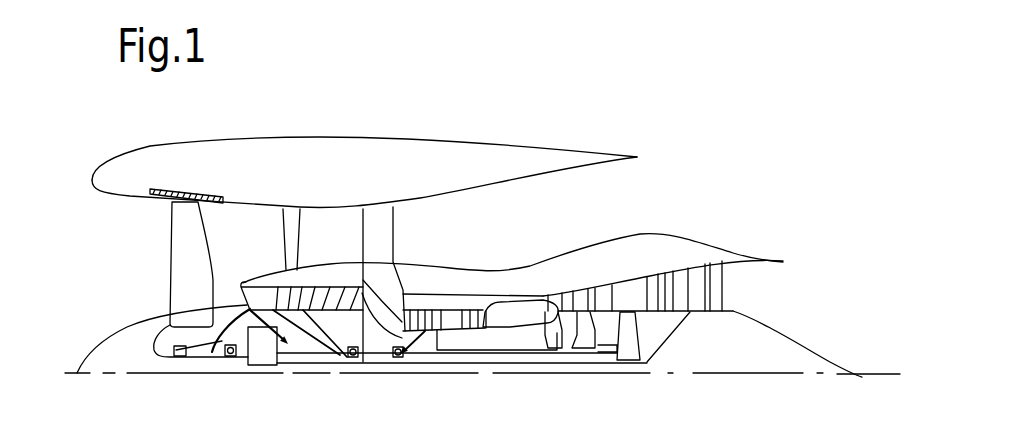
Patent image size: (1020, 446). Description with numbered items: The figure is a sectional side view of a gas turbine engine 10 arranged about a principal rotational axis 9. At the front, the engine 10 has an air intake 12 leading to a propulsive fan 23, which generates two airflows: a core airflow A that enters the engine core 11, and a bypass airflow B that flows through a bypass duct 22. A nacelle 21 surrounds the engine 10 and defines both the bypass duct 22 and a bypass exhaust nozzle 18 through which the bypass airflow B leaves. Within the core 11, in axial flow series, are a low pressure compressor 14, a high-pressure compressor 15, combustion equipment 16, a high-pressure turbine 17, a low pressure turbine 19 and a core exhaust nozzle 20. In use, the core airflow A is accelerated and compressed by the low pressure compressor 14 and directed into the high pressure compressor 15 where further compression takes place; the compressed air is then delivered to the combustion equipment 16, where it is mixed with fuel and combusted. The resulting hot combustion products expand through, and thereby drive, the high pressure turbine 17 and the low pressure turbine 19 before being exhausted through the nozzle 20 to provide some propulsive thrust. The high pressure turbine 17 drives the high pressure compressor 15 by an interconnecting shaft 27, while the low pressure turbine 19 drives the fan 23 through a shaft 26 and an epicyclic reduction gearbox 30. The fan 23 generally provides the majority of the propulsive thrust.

The principal rotational axis 9 is at (696, 378).
The gas turbine engine 10 is at (148, 146).
The core 11 is at (507, 276).
The air intake 12 is at (104, 230).
The low pressure compressor 14 is at (323, 287).
The high-pressure compressor 15 is at (450, 320).
The combustion equipment 16 is at (530, 318).
The high-pressure turbine 17 is at (580, 307).
The bypass exhaust nozzle 18 is at (696, 193).
The low pressure turbine 19 is at (698, 277).
The core exhaust nozzle 20 is at (762, 295).
The nacelle 21 is at (385, 150).
The bypass duct 22 is at (616, 208).
The propulsive fan 23 is at (177, 268).
The shaft 26 is at (447, 362).
The interconnecting shaft 27 is at (488, 352).
The epicyclic gearbox 30 is at (263, 357).
The core airflow A is at (239, 297).
The bypass airflow B is at (246, 239).